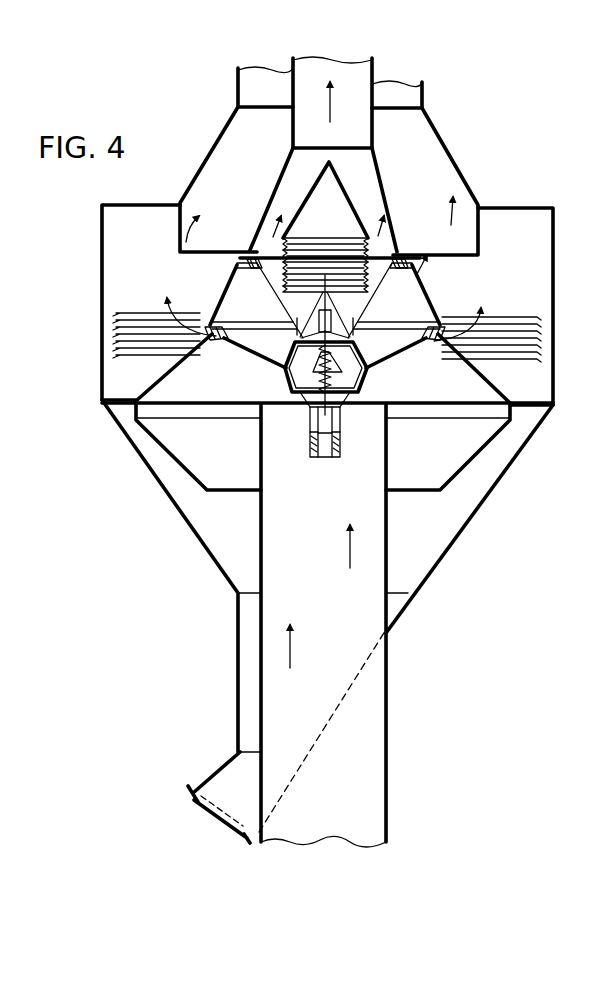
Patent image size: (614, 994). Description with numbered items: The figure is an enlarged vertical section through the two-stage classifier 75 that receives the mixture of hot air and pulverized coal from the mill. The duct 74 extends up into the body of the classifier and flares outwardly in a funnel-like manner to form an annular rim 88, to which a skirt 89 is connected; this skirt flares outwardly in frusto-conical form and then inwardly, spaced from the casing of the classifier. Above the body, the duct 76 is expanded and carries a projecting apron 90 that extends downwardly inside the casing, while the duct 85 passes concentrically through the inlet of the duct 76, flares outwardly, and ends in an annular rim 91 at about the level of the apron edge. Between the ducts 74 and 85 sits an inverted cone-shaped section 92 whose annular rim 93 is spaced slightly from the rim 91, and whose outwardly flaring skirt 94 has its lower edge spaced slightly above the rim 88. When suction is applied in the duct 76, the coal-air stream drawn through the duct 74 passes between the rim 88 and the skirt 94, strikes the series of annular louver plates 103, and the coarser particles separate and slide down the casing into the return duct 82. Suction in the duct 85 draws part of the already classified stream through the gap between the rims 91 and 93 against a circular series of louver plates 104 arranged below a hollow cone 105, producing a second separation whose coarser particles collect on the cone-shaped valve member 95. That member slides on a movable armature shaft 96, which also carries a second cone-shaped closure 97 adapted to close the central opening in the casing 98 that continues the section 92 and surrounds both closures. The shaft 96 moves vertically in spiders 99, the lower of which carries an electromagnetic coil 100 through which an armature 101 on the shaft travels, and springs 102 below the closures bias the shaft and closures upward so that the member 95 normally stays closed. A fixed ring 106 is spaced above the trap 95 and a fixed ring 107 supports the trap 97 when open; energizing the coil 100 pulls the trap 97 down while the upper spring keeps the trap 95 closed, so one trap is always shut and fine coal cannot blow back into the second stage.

The duct 74 is at (258, 526).
The two-stage classifier 75 is at (208, 555).
The duct 76 is at (457, 156).
The return duct 82 is at (210, 770).
The duct 85 is at (240, 92).
The annular rim 88 is at (445, 338).
The skirt 89 is at (492, 388).
The projecting apron 90 is at (482, 240).
The annular rim 91 is at (246, 250).
The inverted cone-shaped section 92 is at (224, 302).
The annular rim 93 is at (241, 260).
The outwardly flaring skirt 94 is at (232, 278).
The cone-shaped valve member 95 is at (360, 315).
The armature shaft 96 is at (300, 320).
The second cone-shaped closure 97 is at (350, 365).
The casing 98 is at (365, 382).
The spiders 99 is at (390, 404).
The electromagnetic coil 100 is at (308, 455).
The armature 101 is at (312, 430).
The springs 102 is at (290, 366).
The annular louver plates 103 is at (540, 332).
The louver plates 104 is at (298, 238).
The hollow cone 105 is at (364, 232).
The fixed ring 106 is at (290, 300).
The fixed ring 107 is at (310, 357).